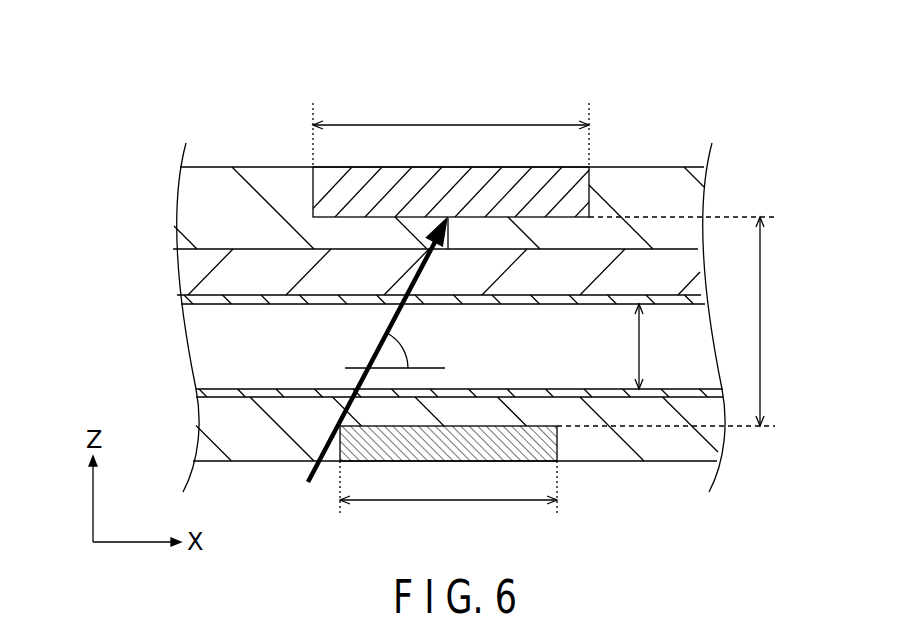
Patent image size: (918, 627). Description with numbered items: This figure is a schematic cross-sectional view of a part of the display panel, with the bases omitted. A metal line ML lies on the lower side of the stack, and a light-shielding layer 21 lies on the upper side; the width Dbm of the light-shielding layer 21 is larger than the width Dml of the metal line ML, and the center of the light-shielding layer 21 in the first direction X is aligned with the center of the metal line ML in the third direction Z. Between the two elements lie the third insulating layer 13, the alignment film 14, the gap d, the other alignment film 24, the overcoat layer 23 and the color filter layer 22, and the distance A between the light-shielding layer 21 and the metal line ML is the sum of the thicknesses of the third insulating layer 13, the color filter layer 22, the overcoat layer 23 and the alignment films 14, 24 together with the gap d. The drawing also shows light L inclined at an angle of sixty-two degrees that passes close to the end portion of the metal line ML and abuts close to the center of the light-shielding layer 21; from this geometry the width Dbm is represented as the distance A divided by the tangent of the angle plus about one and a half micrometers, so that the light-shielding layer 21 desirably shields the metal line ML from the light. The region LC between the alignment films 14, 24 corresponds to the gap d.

The light-shielding layer 21 is at (320, 192).
The color filter layer 22 is at (187, 205).
The overcoat layer 23 is at (185, 265).
The alignment film 24 is at (179, 297).
The liquid crystal layer LC is at (213, 347).
The alignment film 14 is at (196, 393).
The third insulating layer 13 is at (225, 430).
The metal line ML is at (558, 448).
The light L is at (368, 346).
The width of the light-shielding layer Dbm is at (451, 131).
The width of the metal line Dml is at (448, 499).
The gap d is at (648, 346).
The distance A is at (671, 321).